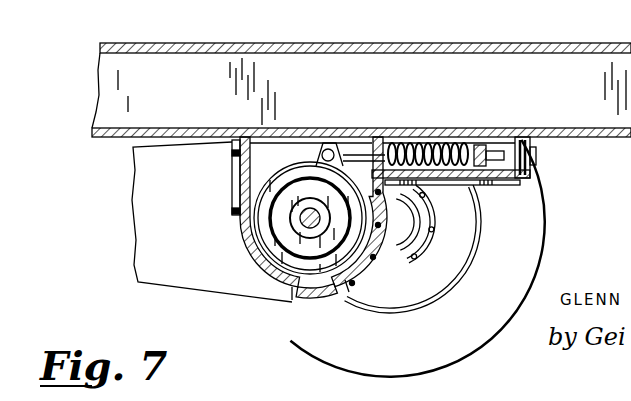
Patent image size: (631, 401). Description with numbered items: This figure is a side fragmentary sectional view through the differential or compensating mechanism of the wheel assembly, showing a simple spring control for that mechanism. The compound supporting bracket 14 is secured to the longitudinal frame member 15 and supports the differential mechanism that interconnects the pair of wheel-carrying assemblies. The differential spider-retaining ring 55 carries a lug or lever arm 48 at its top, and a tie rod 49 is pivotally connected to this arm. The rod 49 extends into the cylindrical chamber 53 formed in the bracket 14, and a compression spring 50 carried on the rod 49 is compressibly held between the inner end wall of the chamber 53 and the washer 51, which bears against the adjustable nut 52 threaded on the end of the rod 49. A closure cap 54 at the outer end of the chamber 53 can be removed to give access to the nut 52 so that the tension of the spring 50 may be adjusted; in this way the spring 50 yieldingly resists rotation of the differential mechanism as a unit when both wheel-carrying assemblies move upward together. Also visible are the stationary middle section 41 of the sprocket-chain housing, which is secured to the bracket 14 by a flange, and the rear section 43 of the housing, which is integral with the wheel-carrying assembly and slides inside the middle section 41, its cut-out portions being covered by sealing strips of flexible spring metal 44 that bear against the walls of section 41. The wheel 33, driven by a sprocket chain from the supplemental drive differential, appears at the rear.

The longitudinal frame member 15 is at (179, 70).
The compound supporting bracket 14 is at (263, 160).
The middle section of the housing 41 is at (188, 270).
The differential spider-retaining ring 55 is at (287, 258).
The sealing strips of flexible spring metal 44 is at (338, 302).
The lug or lever arm 48 is at (328, 147).
The tie rod 49 is at (355, 158).
The compression spring 50 is at (412, 137).
The chamber 53 is at (447, 141).
The washer 51 is at (481, 163).
The adjustable nut 52 is at (485, 178).
The closure cap 54 is at (530, 137).
The rear section of the housing 43 is at (387, 262).
The wheel 33 is at (536, 216).